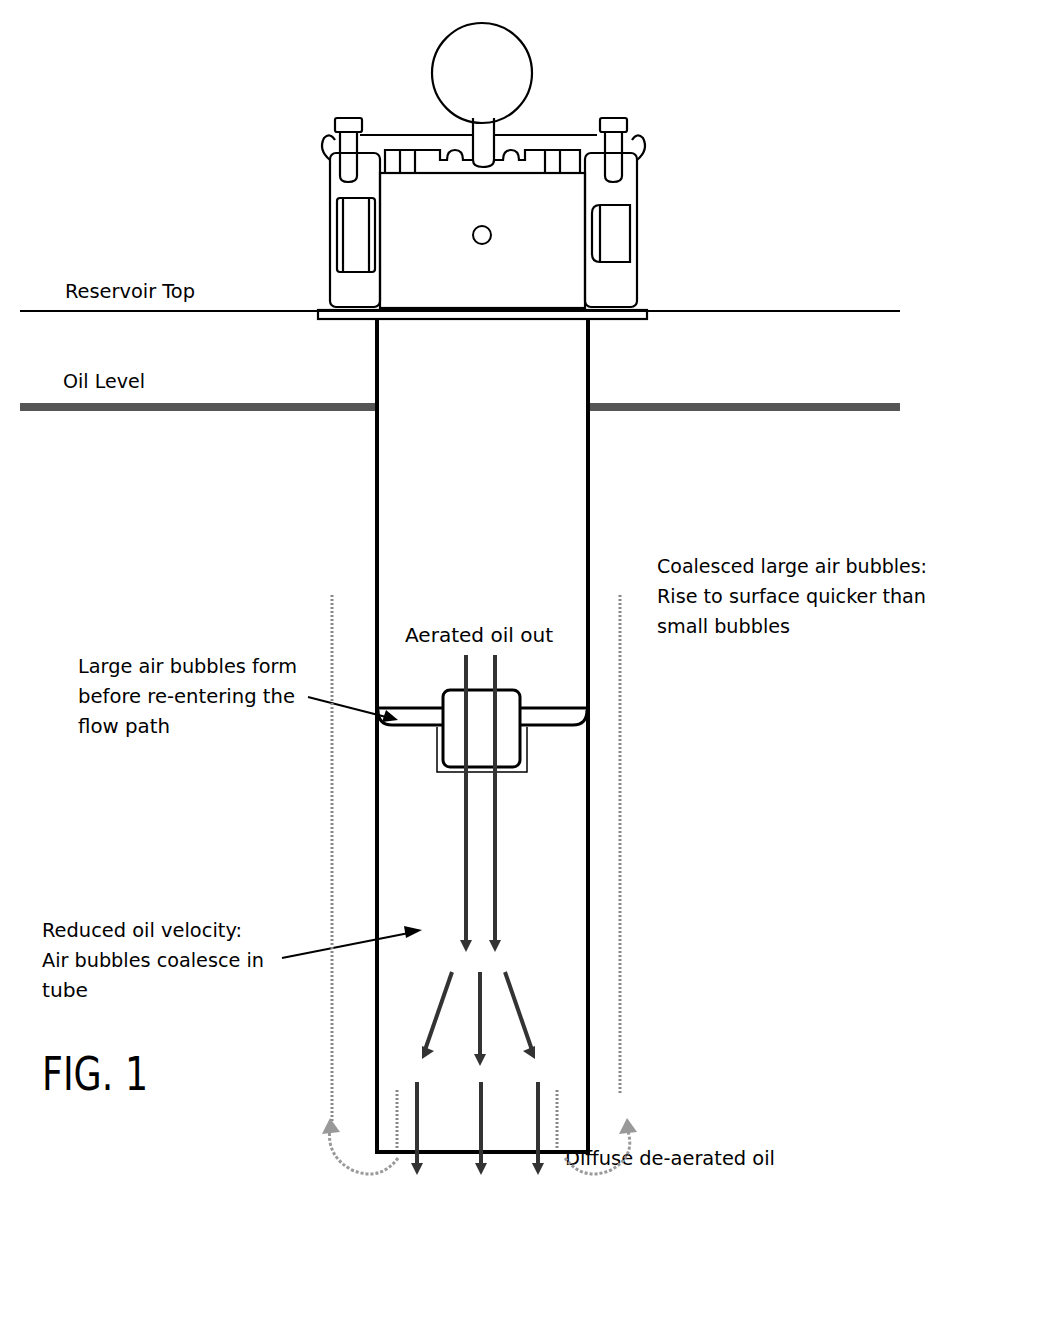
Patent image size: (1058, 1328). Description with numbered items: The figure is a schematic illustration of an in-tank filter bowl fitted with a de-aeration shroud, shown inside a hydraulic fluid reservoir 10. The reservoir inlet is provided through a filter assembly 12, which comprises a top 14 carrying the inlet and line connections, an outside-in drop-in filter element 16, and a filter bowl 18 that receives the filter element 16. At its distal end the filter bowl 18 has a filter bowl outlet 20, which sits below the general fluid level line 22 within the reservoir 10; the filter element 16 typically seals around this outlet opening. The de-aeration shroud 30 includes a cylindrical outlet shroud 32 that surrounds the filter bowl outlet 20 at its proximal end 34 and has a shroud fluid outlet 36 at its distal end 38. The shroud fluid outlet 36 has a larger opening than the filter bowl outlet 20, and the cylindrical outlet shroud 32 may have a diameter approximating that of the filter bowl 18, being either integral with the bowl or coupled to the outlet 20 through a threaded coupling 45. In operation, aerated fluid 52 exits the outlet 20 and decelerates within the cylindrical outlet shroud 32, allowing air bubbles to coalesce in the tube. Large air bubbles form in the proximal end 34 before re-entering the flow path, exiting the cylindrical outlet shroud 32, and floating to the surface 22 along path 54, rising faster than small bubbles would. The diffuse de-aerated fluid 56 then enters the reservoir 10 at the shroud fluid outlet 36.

The reservoir 10 is at (780, 310).
The filter assembly 12 is at (720, 148).
The top 14 is at (442, 268).
The filter element 16 is at (514, 465).
The filter bowl 18 is at (593, 376).
The filter bowl outlet 20 is at (521, 692).
The fluid level line 22 is at (745, 403).
The de-aeration shroud 30 is at (690, 818).
The cylindrical outlet shroud 32 is at (590, 893).
The proximal end 34 is at (591, 730).
The shroud fluid outlet 36 is at (432, 1155).
The distal end 38 is at (375, 1150).
The threaded coupling 45 is at (440, 752).
The aerated fluid 52 is at (462, 676).
The path 54 is at (622, 1000).
The diffuse de-aerated fluid 56 is at (487, 1140).